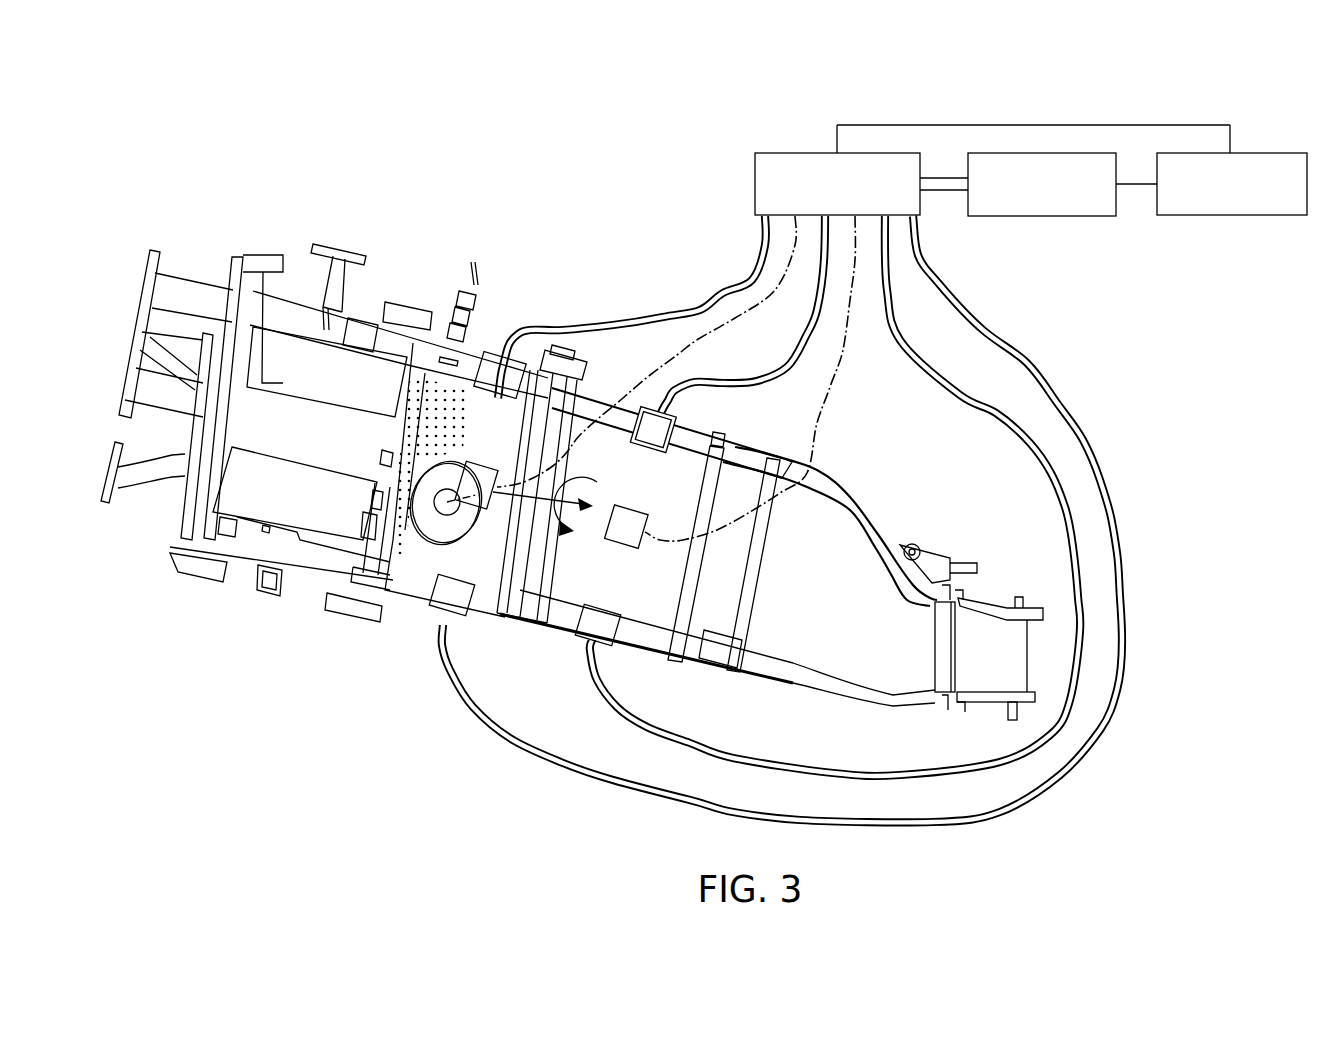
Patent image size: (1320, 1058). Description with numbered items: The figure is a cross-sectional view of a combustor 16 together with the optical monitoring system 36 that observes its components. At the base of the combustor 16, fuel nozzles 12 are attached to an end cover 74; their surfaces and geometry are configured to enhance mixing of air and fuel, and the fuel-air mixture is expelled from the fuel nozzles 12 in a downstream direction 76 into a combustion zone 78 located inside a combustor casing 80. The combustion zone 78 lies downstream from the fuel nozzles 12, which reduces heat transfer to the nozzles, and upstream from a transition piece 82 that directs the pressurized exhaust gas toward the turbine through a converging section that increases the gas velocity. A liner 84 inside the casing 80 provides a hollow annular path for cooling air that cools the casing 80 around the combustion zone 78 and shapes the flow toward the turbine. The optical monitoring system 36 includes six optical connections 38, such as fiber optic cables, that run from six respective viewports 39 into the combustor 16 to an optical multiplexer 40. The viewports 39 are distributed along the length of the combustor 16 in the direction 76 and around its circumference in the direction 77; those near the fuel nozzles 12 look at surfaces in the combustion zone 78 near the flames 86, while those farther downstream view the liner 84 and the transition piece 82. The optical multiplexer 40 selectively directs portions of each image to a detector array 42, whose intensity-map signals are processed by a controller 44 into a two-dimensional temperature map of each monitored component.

The fuel nozzles 12 is at (254, 445).
The combustor 16 is at (624, 297).
The optical monitoring system 36 is at (1031, 166).
The optical connections 38 is at (578, 327).
The viewports 39 is at (476, 393).
The optical multiplexer 40 is at (777, 153).
The detector array 42 is at (1085, 216).
The controller 44 is at (1265, 153).
The end cover 74 is at (207, 498).
The downstream direction 76 is at (583, 500).
The circumferential direction 77 is at (590, 480).
The combustion zone 78 is at (548, 597).
The combustor casing 80 is at (412, 500).
The transition piece 82 is at (803, 653).
The liner 84 is at (527, 377).
The flames 86 is at (410, 515).